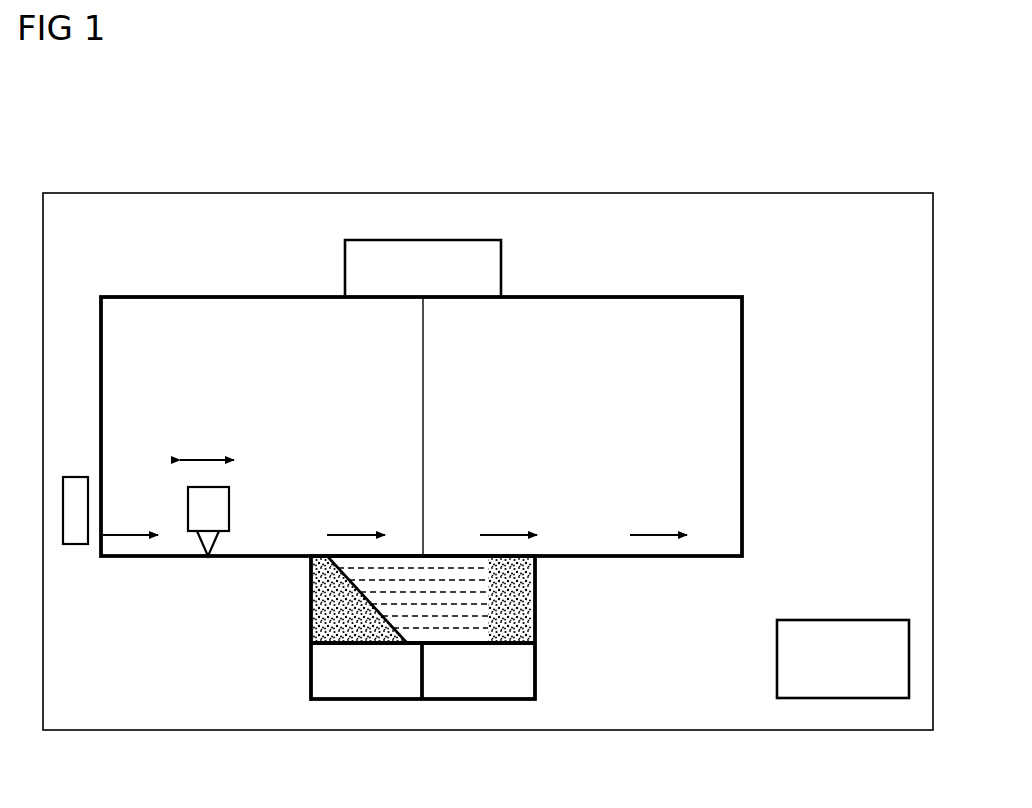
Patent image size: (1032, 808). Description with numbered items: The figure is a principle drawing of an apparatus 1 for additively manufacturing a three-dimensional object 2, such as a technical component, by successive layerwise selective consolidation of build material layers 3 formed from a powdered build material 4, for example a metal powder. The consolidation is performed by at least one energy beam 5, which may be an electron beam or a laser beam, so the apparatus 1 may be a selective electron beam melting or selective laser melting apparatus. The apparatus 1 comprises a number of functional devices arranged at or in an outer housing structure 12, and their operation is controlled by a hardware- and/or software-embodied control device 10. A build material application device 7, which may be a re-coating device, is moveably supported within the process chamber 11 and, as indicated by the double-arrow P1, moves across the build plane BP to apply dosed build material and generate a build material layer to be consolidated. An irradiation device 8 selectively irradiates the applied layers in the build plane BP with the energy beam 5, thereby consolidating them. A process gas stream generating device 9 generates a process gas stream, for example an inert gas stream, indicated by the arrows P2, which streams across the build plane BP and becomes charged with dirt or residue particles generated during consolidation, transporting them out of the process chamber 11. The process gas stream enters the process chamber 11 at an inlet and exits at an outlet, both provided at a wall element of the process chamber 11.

The apparatus 1 is at (826, 122).
The three-dimensional object 2 is at (460, 600).
The build material layer 3 is at (322, 573).
The powdered build material 4 is at (322, 623).
The energy beam 5 is at (424, 380).
The build material application device 7 is at (258, 480).
The irradiation device 8 is at (474, 218).
The process gas stream generating device 9 is at (74, 475).
The control device 10 is at (776, 657).
The process chamber 11 is at (745, 326).
The housing structure 12 is at (665, 191).
The double-arrow P1 is at (209, 456).
The arrows P2 is at (123, 532).
The build plane BP is at (462, 520).